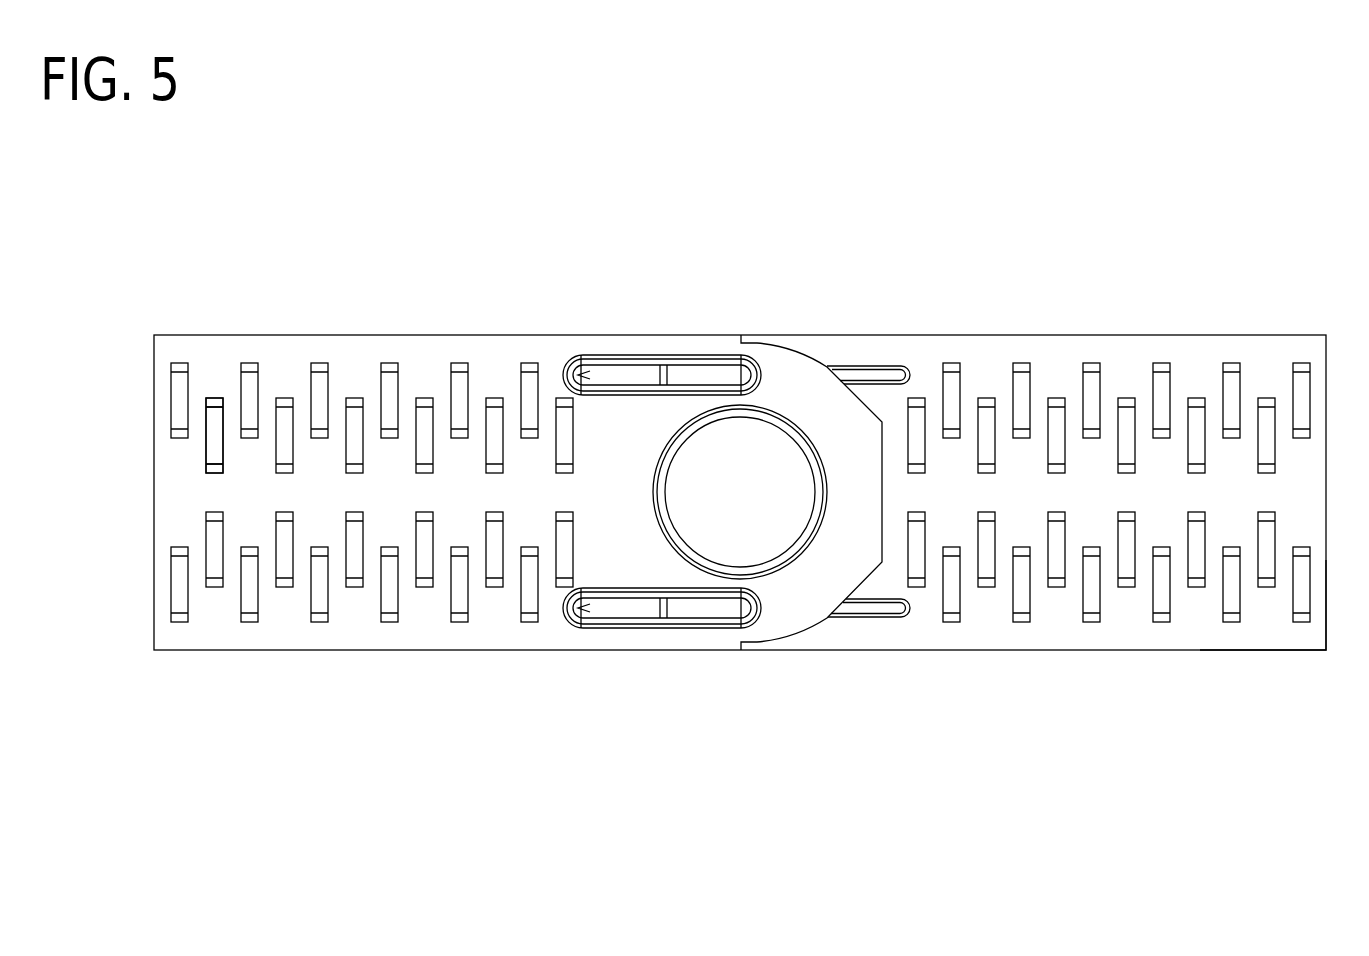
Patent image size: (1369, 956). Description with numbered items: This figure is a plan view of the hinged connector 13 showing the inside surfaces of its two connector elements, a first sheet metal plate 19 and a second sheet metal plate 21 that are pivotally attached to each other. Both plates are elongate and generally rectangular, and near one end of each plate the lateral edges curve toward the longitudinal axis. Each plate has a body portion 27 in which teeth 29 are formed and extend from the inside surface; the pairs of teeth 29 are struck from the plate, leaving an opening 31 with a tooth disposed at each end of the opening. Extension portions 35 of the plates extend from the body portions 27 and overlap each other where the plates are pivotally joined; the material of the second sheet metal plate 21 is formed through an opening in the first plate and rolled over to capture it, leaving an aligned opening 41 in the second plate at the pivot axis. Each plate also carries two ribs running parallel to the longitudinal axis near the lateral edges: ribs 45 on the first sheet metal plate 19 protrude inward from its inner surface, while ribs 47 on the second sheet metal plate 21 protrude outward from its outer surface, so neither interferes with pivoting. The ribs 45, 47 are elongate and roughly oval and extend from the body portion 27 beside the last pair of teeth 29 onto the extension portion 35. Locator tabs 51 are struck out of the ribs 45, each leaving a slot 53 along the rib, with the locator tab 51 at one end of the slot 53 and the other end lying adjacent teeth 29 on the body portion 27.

The hinged connector 13 is at (1310, 225).
The first sheet metal plate 19 is at (497, 318).
The second sheet metal plate 21 is at (1298, 668).
The body portion 27 is at (427, 366).
The teeth 29 is at (288, 513).
The opening 31 is at (1053, 537).
The extension portion 35 is at (803, 594).
The opening in the second sheet metal plate 41 is at (758, 456).
The ribs of the first sheet metal plate 45 is at (708, 358).
The ribs of the second sheet metal plate 47 is at (875, 380).
The locator tab 51 is at (667, 378).
The slot 53 is at (620, 376).